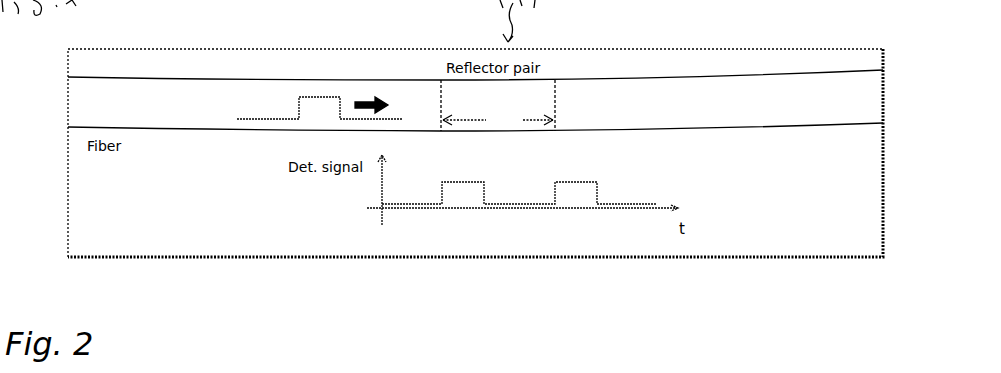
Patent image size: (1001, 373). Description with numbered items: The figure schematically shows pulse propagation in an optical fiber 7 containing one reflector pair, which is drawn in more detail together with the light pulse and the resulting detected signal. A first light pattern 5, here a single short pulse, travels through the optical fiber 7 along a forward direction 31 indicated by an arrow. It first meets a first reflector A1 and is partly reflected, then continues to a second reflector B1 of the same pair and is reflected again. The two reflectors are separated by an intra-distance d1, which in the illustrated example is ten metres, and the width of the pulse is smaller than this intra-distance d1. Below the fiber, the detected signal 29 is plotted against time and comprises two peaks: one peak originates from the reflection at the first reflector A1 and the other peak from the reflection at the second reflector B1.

The first light pattern 5 is at (325, 97).
The forward direction 31 is at (373, 100).
The first reflector A1 is at (441, 100).
The second reflector B1 is at (557, 100).
The intra-distance d1 is at (498, 119).
The optical fiber 7 is at (742, 70).
The detected signal 29 is at (590, 182).